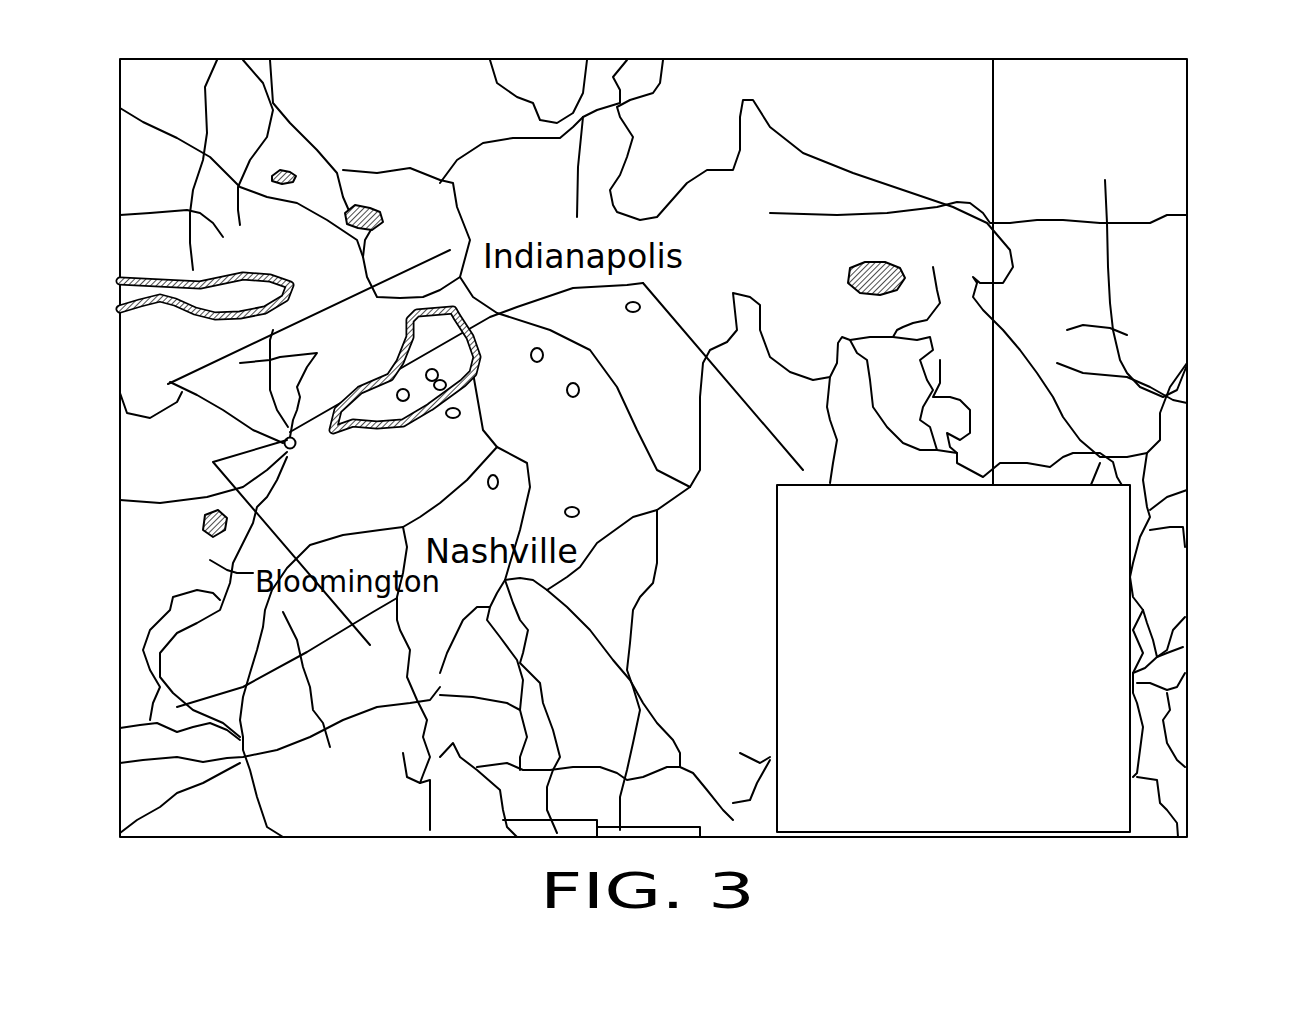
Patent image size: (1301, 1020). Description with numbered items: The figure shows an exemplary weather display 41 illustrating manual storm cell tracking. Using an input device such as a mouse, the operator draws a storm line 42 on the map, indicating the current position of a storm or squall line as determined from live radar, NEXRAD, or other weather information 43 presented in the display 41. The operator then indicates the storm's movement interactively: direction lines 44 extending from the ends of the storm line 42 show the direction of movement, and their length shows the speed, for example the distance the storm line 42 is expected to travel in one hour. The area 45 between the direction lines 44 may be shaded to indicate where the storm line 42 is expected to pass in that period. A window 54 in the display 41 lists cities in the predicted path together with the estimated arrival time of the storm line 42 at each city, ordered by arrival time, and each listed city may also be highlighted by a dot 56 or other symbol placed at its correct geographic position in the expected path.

The weather display 41 is at (1187, 443).
The storm line 42 is at (170, 382).
The weather information 43 is at (398, 348).
The direction lines 44 is at (177, 707).
The area between the direction lines 45 is at (290, 505).
The window 54 is at (1120, 593).
The dot 56 is at (160, 503).